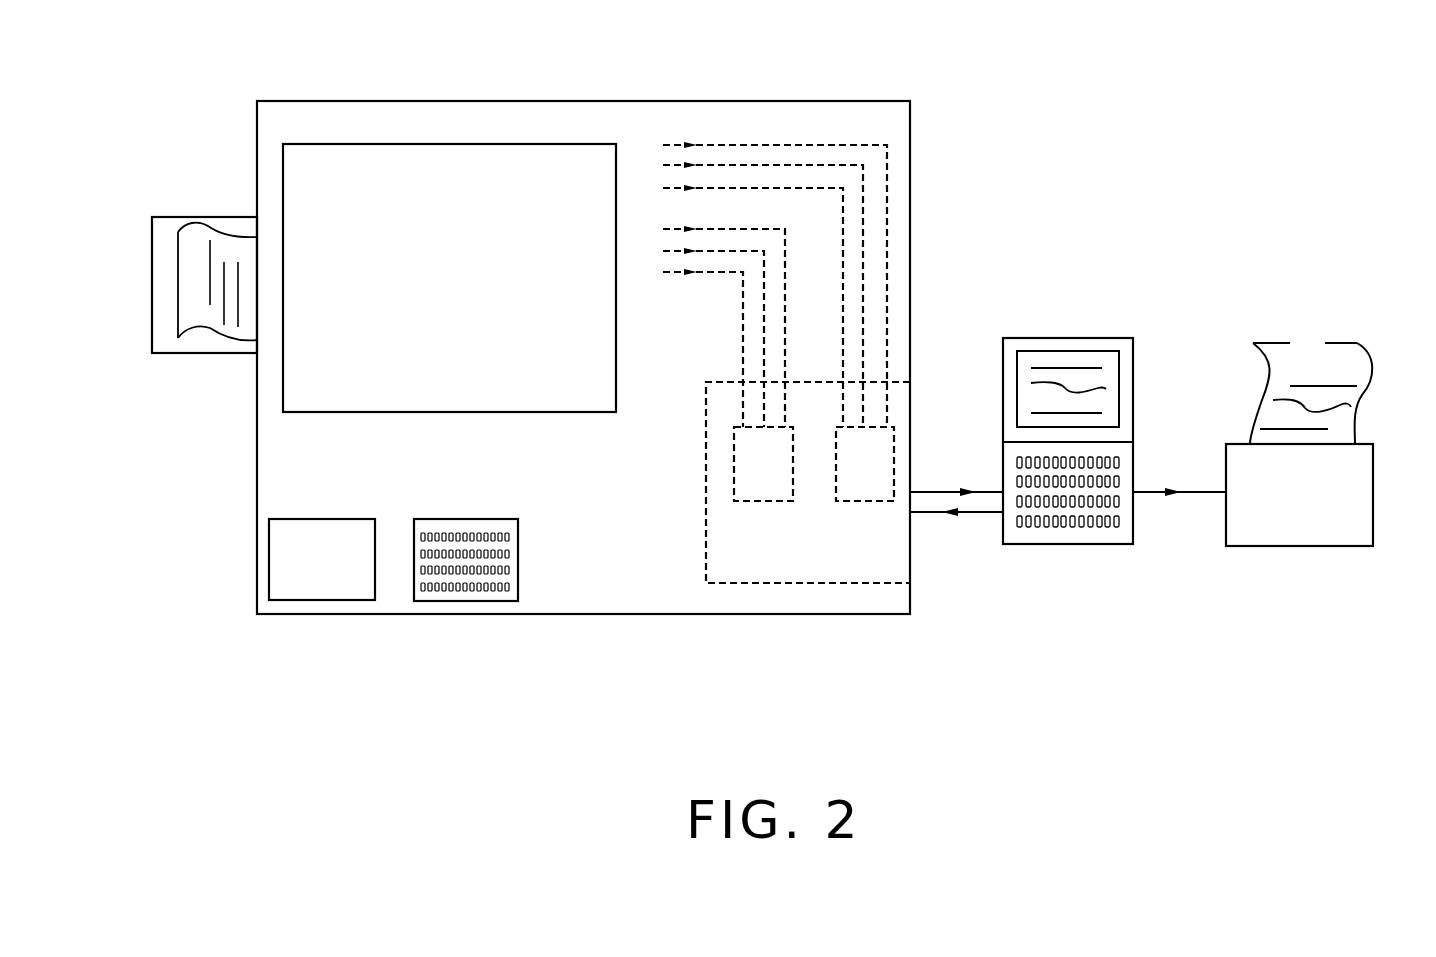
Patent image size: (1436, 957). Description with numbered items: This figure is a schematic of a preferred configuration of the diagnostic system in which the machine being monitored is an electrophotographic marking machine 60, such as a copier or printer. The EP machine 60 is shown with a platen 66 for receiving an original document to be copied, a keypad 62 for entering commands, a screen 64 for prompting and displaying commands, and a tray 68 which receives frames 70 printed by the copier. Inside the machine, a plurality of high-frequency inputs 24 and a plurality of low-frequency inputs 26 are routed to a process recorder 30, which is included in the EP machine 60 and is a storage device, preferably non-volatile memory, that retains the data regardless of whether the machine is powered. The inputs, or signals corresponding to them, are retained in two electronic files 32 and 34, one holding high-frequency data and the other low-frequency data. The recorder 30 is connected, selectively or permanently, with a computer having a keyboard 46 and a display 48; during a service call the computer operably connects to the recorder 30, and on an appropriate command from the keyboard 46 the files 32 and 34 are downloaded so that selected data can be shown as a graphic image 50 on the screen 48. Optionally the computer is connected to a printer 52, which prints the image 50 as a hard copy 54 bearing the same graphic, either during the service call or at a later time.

The high-frequency inputs 24 is at (723, 276).
The low-frequency inputs 26 is at (773, 188).
The recorder 30 is at (787, 570).
The electronic file 32 is at (743, 484).
The electronic file 34 is at (887, 453).
The keyboard 46 is at (1078, 512).
The display 48 is at (1110, 358).
The graphic image 50 is at (1108, 389).
The printer 52 is at (1333, 538).
The hard copy 54 is at (1295, 352).
The electrophotographic marking machine 60 is at (297, 108).
The keypad 62 is at (488, 587).
The screen 64 is at (327, 586).
The platen 66 is at (382, 160).
The tray 68 is at (162, 308).
The frames 70 is at (195, 233).